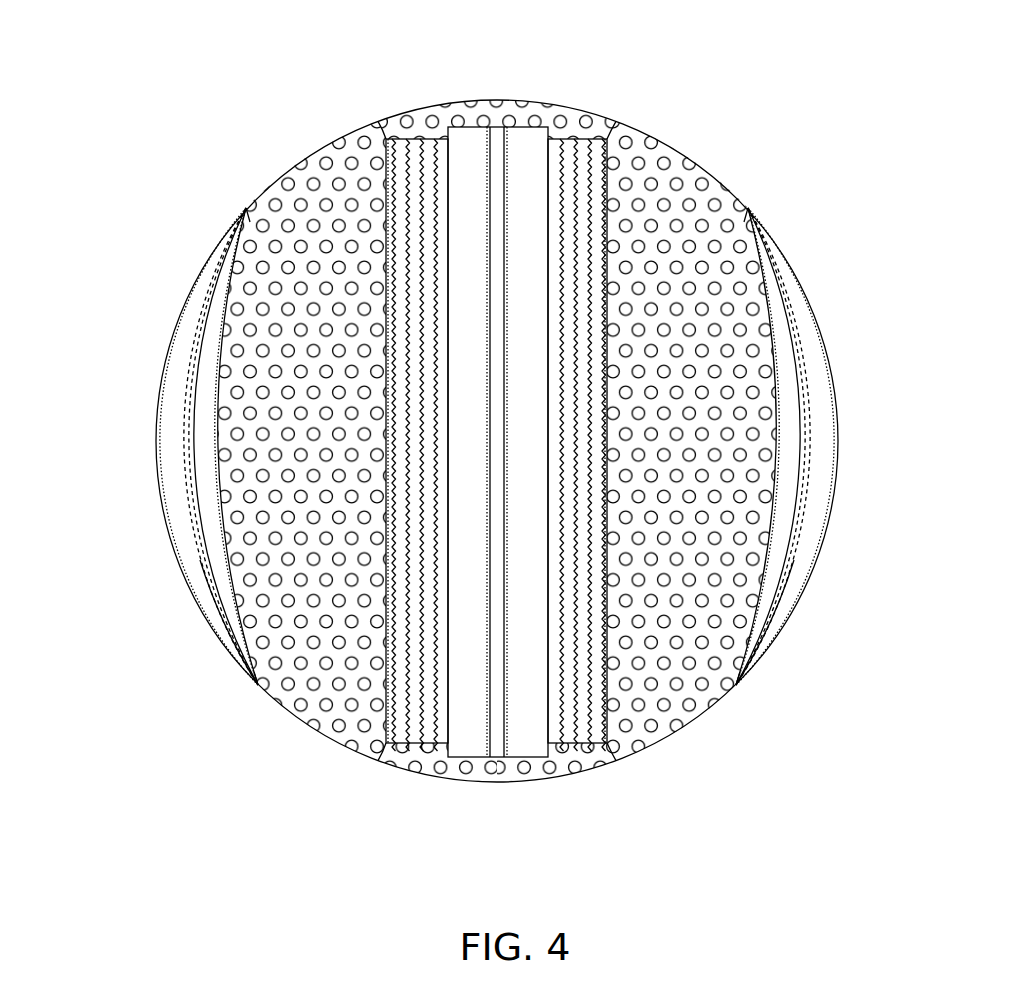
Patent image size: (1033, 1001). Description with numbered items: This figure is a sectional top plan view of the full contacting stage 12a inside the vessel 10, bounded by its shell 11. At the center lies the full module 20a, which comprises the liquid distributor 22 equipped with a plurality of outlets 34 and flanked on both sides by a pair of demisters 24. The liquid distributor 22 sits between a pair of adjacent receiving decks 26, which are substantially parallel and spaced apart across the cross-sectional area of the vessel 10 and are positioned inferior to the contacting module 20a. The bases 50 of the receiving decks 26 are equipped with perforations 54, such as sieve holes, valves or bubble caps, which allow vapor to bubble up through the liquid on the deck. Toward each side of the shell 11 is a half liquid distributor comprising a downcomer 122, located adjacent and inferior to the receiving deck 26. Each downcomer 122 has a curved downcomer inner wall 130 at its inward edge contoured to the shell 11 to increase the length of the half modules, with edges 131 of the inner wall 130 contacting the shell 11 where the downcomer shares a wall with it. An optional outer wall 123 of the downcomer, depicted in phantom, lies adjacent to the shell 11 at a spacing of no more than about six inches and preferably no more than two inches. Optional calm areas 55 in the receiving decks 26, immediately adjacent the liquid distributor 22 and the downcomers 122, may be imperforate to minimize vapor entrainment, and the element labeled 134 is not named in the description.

The vessel 10 is at (215, 140).
The shell 11 is at (225, 242).
The full contacting stage 12a is at (487, 453).
The full module 20a is at (499, 429).
The liquid distributor 22 is at (472, 742).
The demisters 24 is at (392, 138).
The receiving deck 26 is at (325, 152).
The outlets 34 is at (490, 140).
The bases 50 is at (310, 667).
The perforations 54 is at (358, 715).
The calm areas 55 is at (225, 493).
The downcomer 122 is at (178, 348).
The outer wall 123 is at (205, 270).
The downcomer inner wall 130 is at (212, 628).
The edges 131 is at (249, 200).
The mesh layer 134 is at (190, 400).